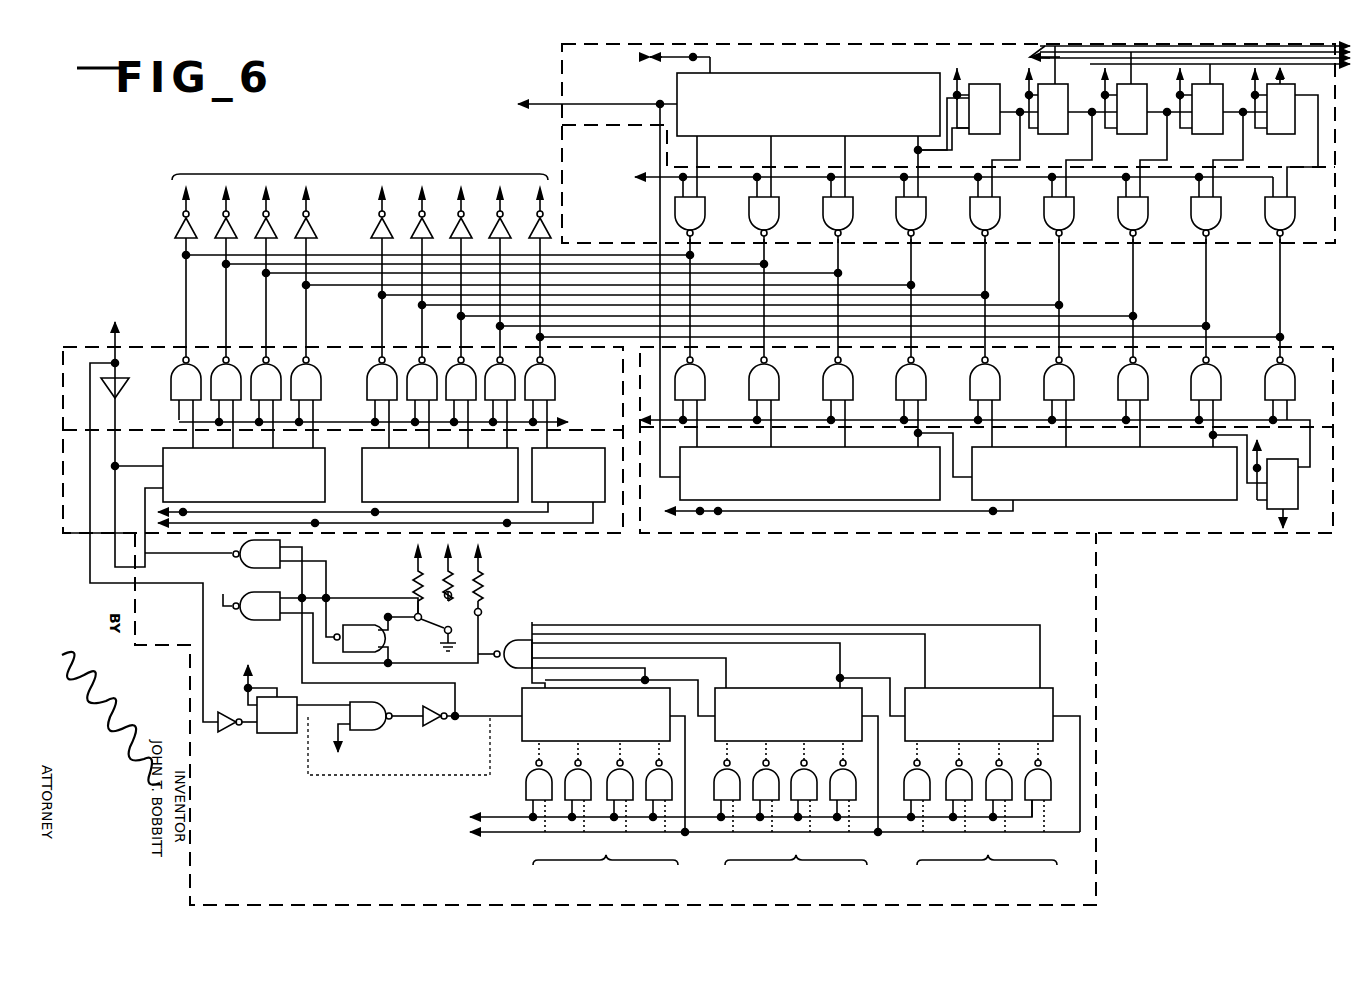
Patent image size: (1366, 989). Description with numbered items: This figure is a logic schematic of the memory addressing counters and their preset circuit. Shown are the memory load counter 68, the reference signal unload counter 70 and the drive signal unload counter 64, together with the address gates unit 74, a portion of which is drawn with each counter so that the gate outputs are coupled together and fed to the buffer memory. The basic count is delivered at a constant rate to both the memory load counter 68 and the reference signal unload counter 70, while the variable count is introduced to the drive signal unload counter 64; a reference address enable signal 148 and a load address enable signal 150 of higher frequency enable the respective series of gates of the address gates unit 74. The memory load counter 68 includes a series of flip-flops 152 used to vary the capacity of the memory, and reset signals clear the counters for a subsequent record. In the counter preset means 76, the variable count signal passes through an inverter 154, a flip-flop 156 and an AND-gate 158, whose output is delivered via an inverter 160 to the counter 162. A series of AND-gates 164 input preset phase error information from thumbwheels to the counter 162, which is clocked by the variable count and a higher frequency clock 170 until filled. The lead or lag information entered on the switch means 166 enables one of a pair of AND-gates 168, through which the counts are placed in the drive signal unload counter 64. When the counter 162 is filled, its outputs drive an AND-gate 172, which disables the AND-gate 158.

The drive signal unload counter 64 is at (72, 533).
The memory load counter 68 is at (562, 60).
The reference signal unload counter 70 is at (1307, 533).
The address gates unit 74 is at (70, 347).
The counter preset means 76 is at (1096, 705).
The reference address enable signal 148 is at (645, 425).
The load address enable signal 150 is at (640, 180).
The flip-flops 152 is at (1152, 140).
The inverter 154 is at (228, 735).
The flip-flop 156 is at (293, 733).
The AND-gate 158 is at (376, 704).
The inverter 160 is at (440, 728).
The counter 162 is at (815, 680).
The AND-gates 164 is at (722, 782).
The switch means 166 is at (494, 603).
The AND-gates 168 is at (233, 568).
The higher frequency clock 170 is at (345, 738).
The AND-gate 172 is at (497, 660).